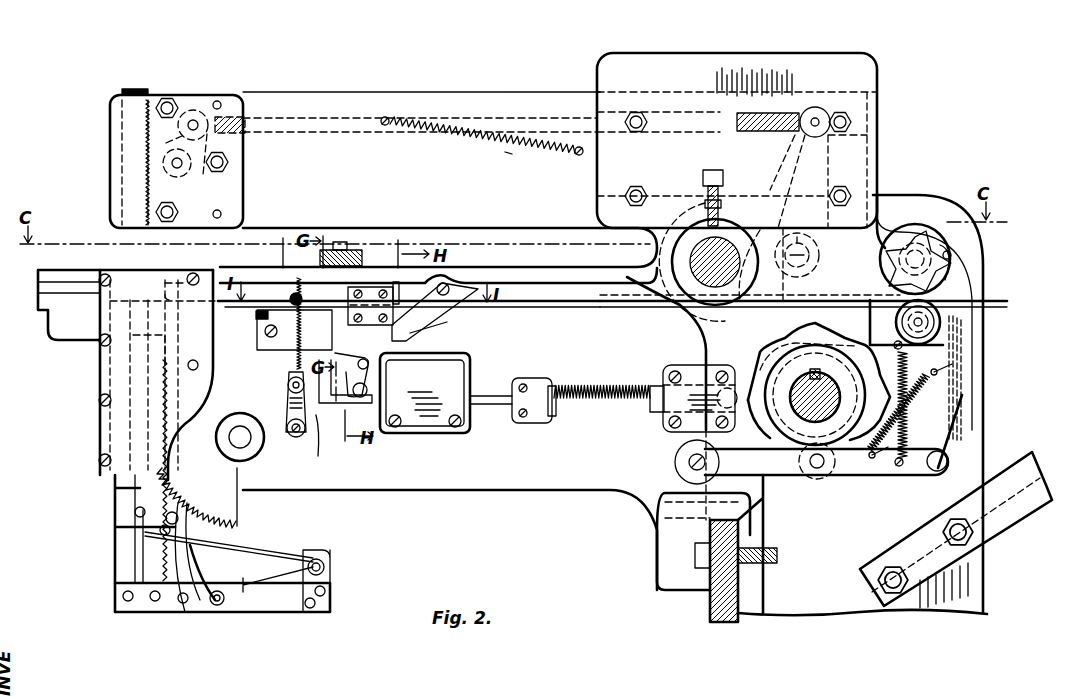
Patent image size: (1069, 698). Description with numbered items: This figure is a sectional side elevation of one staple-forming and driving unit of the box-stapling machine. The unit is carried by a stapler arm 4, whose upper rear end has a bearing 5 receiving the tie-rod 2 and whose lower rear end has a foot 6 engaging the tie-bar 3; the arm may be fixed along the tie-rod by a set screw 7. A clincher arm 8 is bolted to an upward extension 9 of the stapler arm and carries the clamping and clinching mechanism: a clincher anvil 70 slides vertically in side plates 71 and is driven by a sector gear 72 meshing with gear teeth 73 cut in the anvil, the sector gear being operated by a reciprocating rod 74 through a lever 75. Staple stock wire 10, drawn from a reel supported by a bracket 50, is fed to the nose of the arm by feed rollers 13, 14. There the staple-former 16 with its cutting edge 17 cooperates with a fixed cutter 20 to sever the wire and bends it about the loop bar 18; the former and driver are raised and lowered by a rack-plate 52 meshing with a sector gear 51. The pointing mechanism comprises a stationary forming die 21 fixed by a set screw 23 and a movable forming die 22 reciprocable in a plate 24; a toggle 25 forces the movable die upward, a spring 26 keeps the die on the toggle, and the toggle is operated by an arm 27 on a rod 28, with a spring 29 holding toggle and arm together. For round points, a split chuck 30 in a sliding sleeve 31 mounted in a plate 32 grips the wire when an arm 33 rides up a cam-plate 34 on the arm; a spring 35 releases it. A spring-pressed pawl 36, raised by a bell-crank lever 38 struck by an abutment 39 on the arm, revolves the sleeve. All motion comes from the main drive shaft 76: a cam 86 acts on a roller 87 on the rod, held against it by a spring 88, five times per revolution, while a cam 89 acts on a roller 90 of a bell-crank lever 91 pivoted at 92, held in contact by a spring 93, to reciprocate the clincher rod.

The tie-rod 2 is at (700, 236).
The tie-bar 3 is at (710, 606).
The stapler arm 4 is at (408, 490).
The bearing 5 is at (690, 284).
The foot 6 is at (672, 547).
The set screw 7 is at (722, 182).
The clincher arm 8 is at (322, 96).
The upward extension 9 is at (808, 68).
The staple stock wire 10 is at (1000, 300).
The feed roller 13 is at (950, 240).
The feed roller 14 is at (895, 318).
The staple-former 16 is at (122, 360).
The cutting edge 17 is at (162, 342).
The loop bar 18 is at (87, 296).
The fixed cutter 20 is at (184, 276).
The stationary forming die 21 is at (292, 300).
The movable forming die 22 is at (258, 340).
The set screw 23 is at (438, 248).
The plate 24 is at (256, 318).
The toggle 25 is at (300, 410).
The spring 26 is at (289, 380).
The arm 27 is at (318, 456).
The rod 28 is at (508, 414).
The spring 29 is at (289, 396).
The split chuck 30 is at (302, 320).
The sliding sleeve 31 is at (396, 282).
The plate 32 is at (370, 296).
The arm 33 is at (439, 321).
The cam-plate 34 is at (472, 360).
The spring 35 is at (362, 262).
The spring-pressed pawl 36 is at (455, 340).
The bell-crank lever 38 is at (400, 381).
The abutment 39 is at (356, 404).
The bracket 50 is at (1010, 508).
The sector gear 51 is at (240, 505).
The rack-plate 52 is at (155, 492).
The clincher anvil 70 is at (135, 88).
The side plate 71 is at (187, 95).
The sector gear 72 is at (175, 178).
The gear teeth 73 is at (140, 132).
The reciprocating rod 74 is at (481, 118).
The lever 75 is at (200, 160).
The main drive shaft 76 is at (826, 420).
The cam 86 is at (748, 400).
The roller 87 is at (811, 454).
The spring 88 is at (600, 392).
The cam 89 is at (805, 340).
The roller 90 is at (912, 420).
The bell-crank lever 91 is at (788, 165).
The pivot 92 is at (797, 240).
The spring 93 is at (508, 153).